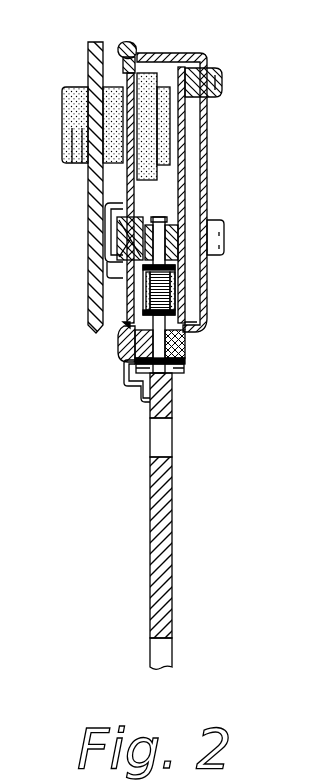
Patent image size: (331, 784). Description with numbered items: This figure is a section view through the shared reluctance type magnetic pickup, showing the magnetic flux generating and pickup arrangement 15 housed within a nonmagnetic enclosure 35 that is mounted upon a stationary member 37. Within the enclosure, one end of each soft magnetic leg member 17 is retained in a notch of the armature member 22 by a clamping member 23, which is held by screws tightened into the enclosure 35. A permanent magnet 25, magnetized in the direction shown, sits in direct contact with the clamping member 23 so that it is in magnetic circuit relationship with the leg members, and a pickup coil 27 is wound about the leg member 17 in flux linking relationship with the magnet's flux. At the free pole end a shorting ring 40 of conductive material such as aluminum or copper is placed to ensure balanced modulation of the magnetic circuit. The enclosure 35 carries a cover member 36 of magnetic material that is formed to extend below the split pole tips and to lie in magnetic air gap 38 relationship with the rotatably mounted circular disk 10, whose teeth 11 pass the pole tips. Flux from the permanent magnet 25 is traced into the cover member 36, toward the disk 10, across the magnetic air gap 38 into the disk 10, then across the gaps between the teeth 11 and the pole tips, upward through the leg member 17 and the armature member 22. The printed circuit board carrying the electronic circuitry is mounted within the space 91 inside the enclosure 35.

The circular disk 10 is at (152, 480).
The teeth 11 is at (168, 373).
The magnetic flux generating and pickup arrangement 15 is at (142, 286).
The leg member 17 is at (186, 341).
The armature member 22 is at (182, 260).
The clamping member 23 is at (148, 225).
The permanent magnet 25 is at (115, 220).
The pickup coil 27 is at (167, 303).
The enclosure 35 is at (208, 125).
The cover member 36 is at (122, 375).
The stationary member 37 is at (93, 62).
The magnetic air gap 38 is at (148, 405).
The shorting ring 40 is at (184, 360).
The space 91 is at (192, 153).